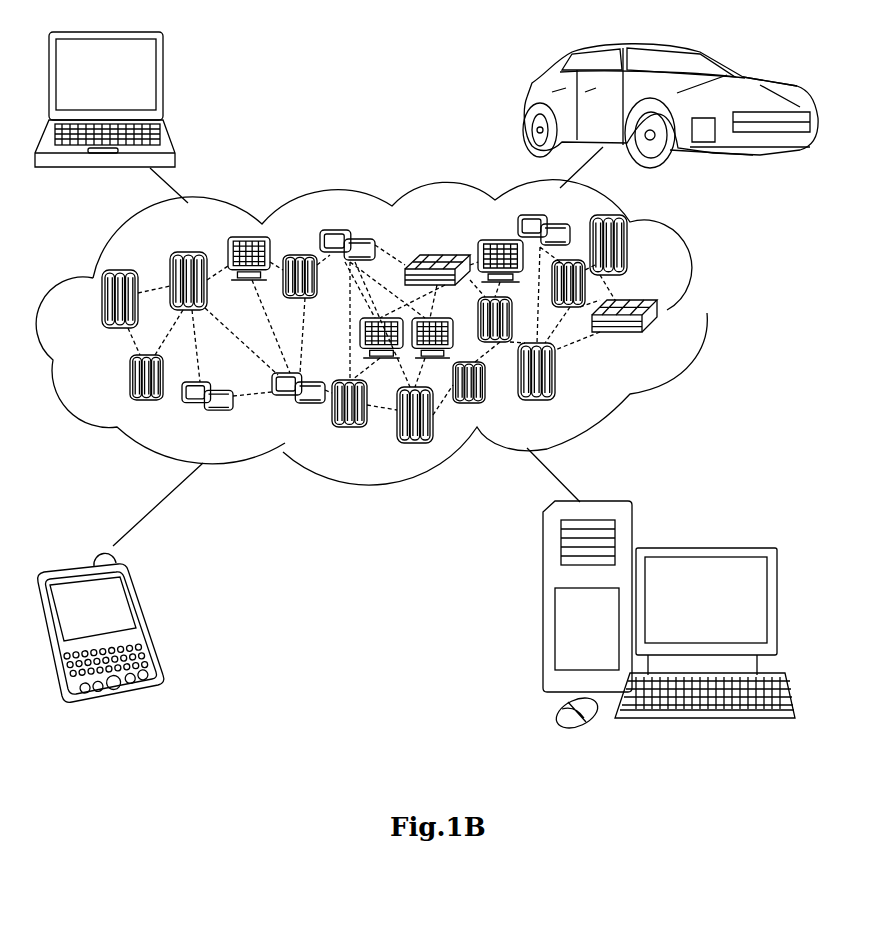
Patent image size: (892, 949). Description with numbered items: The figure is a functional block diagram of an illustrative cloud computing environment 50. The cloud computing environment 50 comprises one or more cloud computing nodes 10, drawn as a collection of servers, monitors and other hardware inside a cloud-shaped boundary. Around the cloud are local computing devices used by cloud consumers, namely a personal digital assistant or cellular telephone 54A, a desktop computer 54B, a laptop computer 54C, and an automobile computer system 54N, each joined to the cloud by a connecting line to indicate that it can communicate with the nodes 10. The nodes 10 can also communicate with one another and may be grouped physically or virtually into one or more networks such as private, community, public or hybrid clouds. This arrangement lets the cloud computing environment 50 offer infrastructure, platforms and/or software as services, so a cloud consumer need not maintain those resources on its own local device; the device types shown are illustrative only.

The cloud computing nodes 10 is at (656, 339).
The cloud computing environment 50 is at (708, 317).
The personal digital assistant or cellular telephone 54A is at (147, 622).
The desktop computer 54B is at (704, 548).
The laptop computer 54C is at (163, 84).
The automobile computer system 54N is at (525, 105).